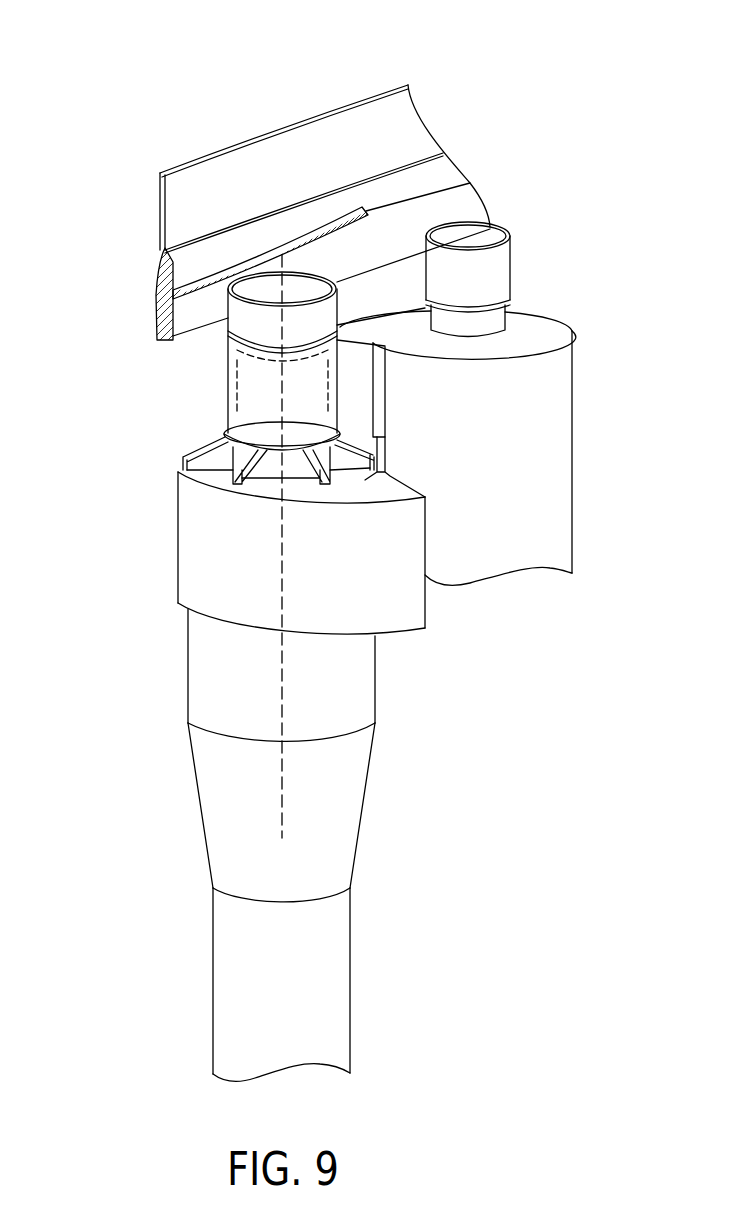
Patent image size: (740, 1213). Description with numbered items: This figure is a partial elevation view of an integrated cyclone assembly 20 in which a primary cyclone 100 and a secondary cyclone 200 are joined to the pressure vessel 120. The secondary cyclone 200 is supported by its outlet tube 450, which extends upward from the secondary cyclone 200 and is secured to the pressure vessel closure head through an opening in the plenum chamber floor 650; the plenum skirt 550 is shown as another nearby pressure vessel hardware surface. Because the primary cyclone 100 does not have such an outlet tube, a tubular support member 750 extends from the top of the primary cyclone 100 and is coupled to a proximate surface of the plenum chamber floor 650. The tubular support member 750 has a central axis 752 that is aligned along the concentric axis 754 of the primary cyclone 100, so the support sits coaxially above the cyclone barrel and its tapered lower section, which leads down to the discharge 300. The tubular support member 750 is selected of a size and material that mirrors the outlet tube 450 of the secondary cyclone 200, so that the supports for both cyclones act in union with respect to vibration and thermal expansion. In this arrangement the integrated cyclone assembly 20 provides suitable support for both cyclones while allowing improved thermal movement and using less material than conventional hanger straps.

The integrated cyclone assembly 20 is at (252, 80).
The plenum skirt 550 is at (148, 230).
The plenum chamber floor 650 is at (262, 236).
The pressure vessel 120 is at (161, 333).
The tubular support member 750 is at (243, 333).
The central axis 752 is at (278, 432).
The outlet tube 450 is at (496, 273).
The secondary cyclone 200 is at (556, 385).
The primary cyclone 100 is at (195, 565).
The concentric axis 754 is at (277, 682).
The discharge duct 300 is at (240, 1008).